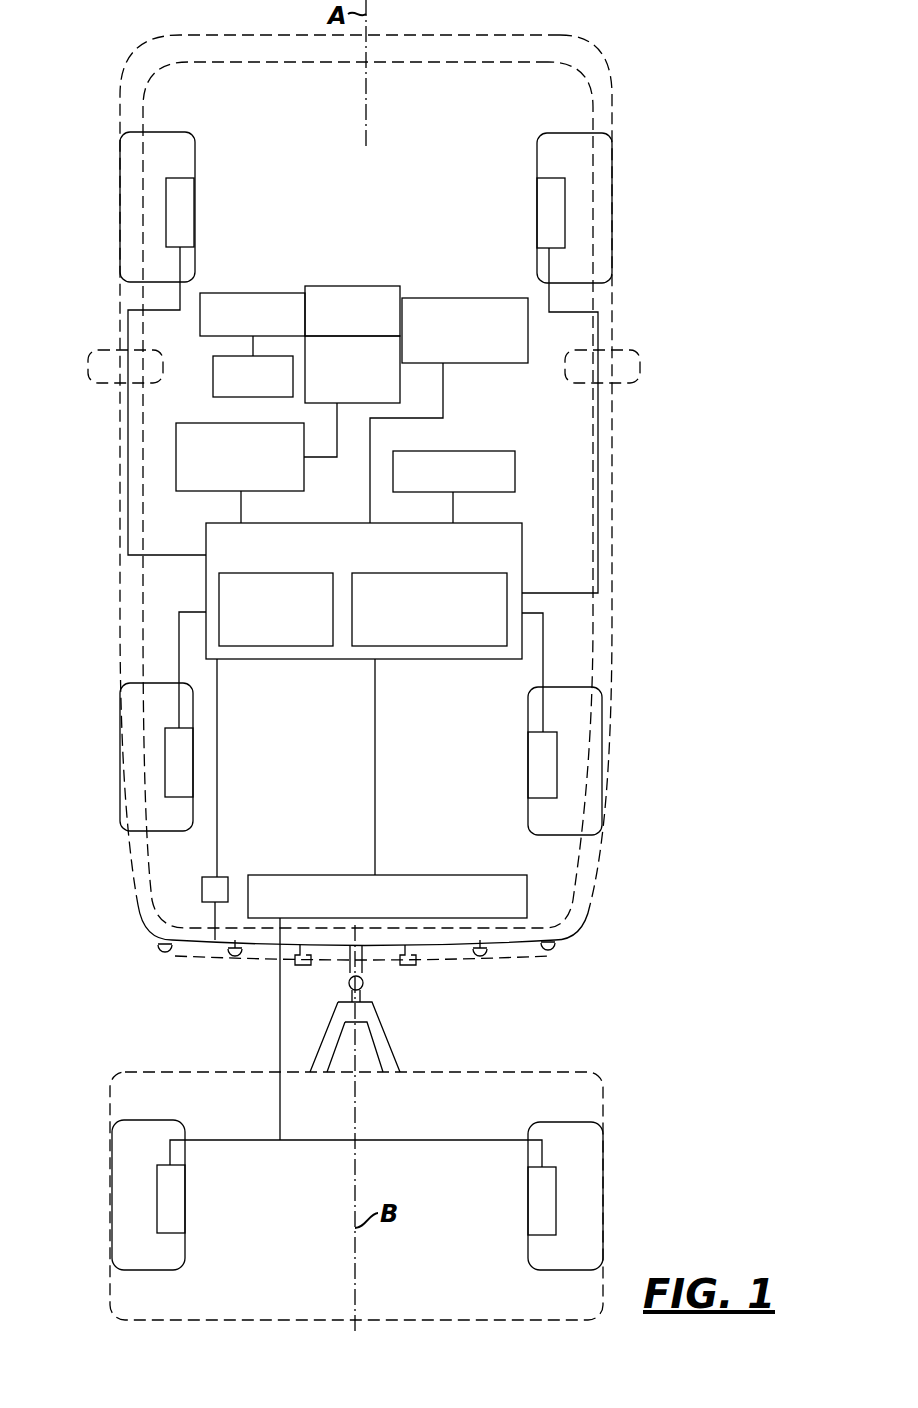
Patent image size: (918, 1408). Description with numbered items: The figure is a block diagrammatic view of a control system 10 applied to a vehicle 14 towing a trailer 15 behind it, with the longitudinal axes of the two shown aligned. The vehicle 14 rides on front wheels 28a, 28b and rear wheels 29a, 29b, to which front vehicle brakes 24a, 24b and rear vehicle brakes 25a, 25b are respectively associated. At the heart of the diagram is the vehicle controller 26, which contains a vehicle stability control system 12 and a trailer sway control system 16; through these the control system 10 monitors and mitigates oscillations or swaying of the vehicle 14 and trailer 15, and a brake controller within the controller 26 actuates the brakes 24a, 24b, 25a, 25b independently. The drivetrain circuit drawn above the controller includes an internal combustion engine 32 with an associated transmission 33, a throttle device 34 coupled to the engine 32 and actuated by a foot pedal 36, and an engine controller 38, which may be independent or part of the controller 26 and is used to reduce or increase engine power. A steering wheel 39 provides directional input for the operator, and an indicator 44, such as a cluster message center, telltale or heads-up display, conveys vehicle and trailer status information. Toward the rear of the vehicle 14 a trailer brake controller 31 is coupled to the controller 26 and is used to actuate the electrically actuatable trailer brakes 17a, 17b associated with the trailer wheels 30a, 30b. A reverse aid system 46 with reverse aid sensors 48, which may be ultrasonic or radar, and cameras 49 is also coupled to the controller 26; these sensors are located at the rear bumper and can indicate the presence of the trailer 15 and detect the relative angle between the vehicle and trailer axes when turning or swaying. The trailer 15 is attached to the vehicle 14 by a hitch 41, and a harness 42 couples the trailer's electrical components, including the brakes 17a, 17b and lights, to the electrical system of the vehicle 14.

The control system 10 is at (400, 496).
The vehicle 14 is at (607, 100).
The wheel 28a is at (612, 150).
The wheel 28b is at (120, 163).
The wheel 29a is at (598, 795).
The wheel 29b is at (120, 712).
The front vehicle brake 24a is at (543, 195).
The front vehicle brake 24b is at (178, 188).
The rear vehicle brake 25a is at (557, 746).
The rear vehicle brake 25b is at (165, 775).
The throttle device 34 is at (257, 293).
The internal combustion engine 32 is at (352, 286).
The transmission 33 is at (400, 390).
The engine controller 38 is at (457, 298).
The foot pedal 36 is at (213, 377).
The steering wheel 39 is at (176, 460).
The indicator 44 is at (473, 450).
The vehicle controller 26 is at (393, 619).
The vehicle stability control system 12 is at (313, 646).
The trailer sway control system 16 is at (460, 646).
The trailer brake controller 31 is at (447, 875).
The reverse aid system 46 is at (202, 890).
The reverse aid sensor 48 is at (165, 952).
The camera 49 is at (303, 965).
The hitch 41 is at (363, 985).
The harness 42 is at (280, 1013).
The trailer 15 is at (557, 1072).
The wheel 30a is at (603, 1150).
The wheel 30b is at (148, 1120).
The trailer brake 17a is at (528, 1192).
The trailer brake 17b is at (185, 1193).